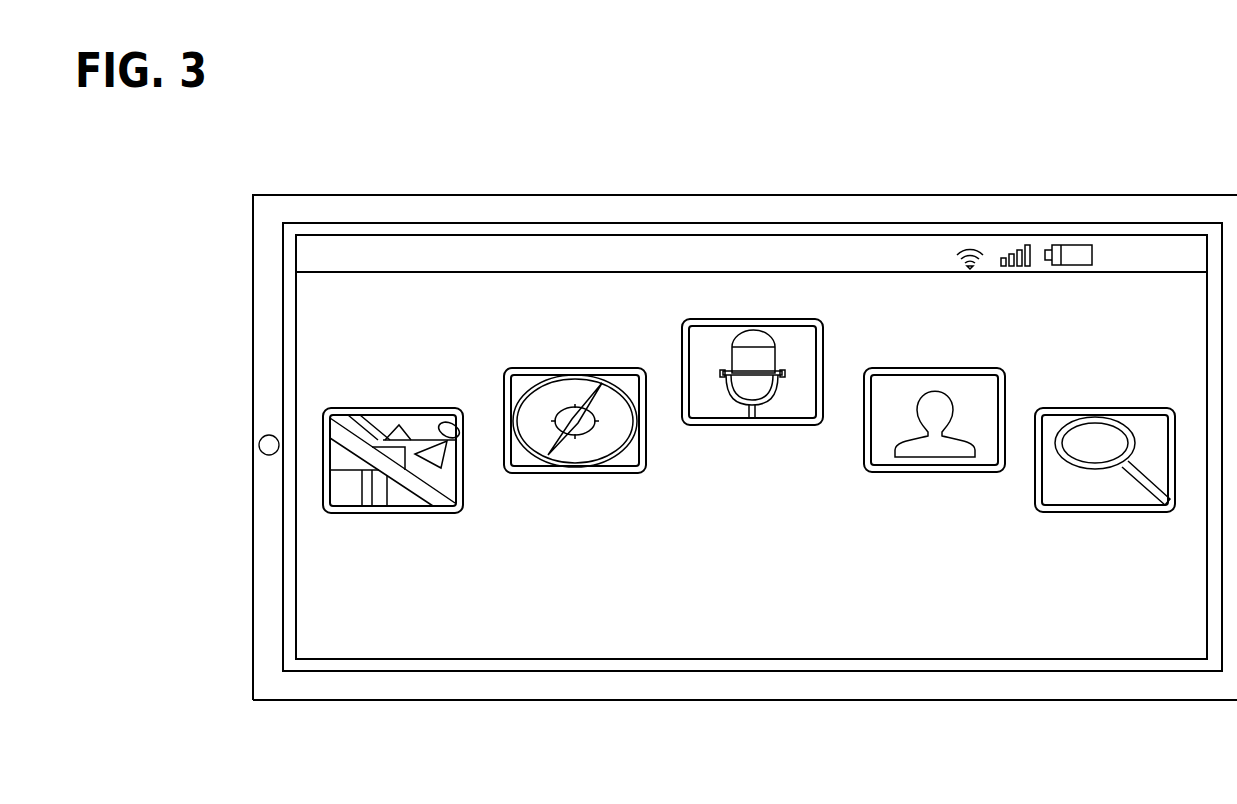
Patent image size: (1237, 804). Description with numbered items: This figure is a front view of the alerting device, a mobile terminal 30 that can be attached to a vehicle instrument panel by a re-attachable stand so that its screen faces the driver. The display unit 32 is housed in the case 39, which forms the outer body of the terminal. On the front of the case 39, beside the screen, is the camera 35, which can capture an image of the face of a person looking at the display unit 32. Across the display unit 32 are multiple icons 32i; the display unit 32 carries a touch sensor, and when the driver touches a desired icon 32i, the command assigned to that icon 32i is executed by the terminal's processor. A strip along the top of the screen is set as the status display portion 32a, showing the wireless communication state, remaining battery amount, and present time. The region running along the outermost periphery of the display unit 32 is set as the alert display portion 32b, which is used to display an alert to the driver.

The mobile terminal 30 is at (510, 192).
The display unit 32 is at (625, 625).
The status display portion 32a is at (820, 252).
The alert display portion 32b is at (750, 662).
The icons 32i is at (393, 513).
The camera 35 is at (259, 443).
The case 39 is at (655, 203).